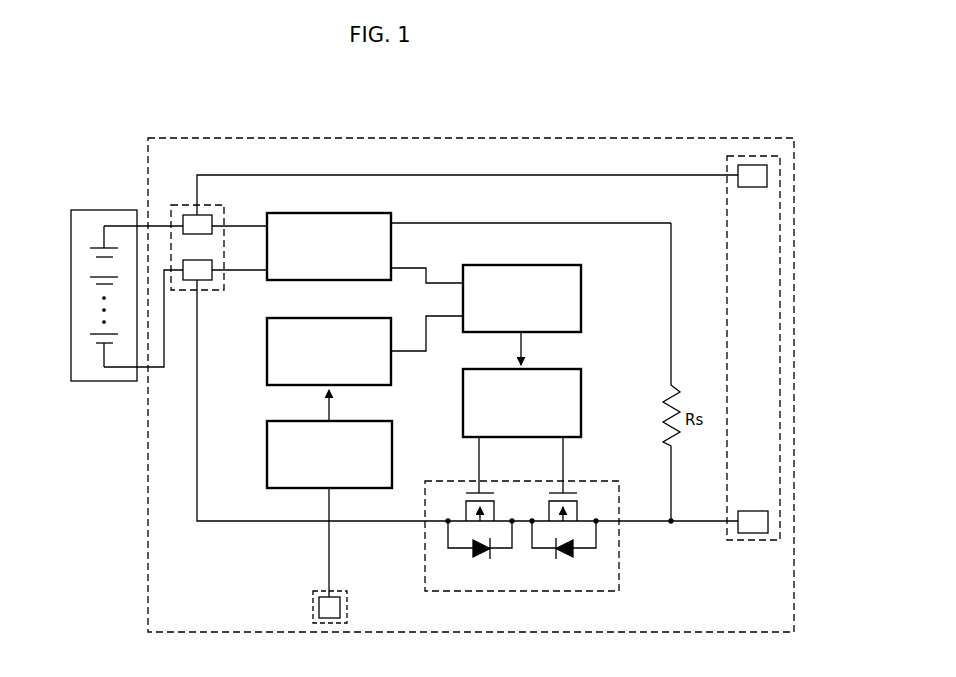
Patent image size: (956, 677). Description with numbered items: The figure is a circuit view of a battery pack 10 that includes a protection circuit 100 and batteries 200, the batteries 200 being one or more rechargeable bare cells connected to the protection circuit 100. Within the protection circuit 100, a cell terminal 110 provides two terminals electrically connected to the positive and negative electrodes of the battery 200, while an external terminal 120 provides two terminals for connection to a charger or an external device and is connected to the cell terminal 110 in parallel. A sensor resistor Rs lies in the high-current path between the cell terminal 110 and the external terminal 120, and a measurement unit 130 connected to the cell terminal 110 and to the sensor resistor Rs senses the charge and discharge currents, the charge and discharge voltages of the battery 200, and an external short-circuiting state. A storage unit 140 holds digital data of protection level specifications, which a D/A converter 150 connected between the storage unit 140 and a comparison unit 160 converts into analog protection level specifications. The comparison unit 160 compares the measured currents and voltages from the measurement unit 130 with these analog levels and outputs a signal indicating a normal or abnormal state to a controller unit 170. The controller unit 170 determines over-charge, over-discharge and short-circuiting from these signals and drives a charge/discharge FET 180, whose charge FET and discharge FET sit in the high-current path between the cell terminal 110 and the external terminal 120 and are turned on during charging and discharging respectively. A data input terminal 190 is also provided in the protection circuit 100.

The battery pack 10 is at (815, 107).
The protection circuit 100 is at (510, 133).
The cell terminal 110 is at (183, 205).
The external terminal 120 is at (748, 540).
The measurement unit 130 is at (327, 213).
The storage unit 140 is at (267, 453).
The D/A converter 150 is at (267, 351).
The comparison unit 160 is at (520, 265).
The controller unit 170 is at (581, 400).
The charge/discharge FET 180 is at (528, 591).
The data input terminal 190 is at (313, 604).
The batteries 200 is at (77, 207).